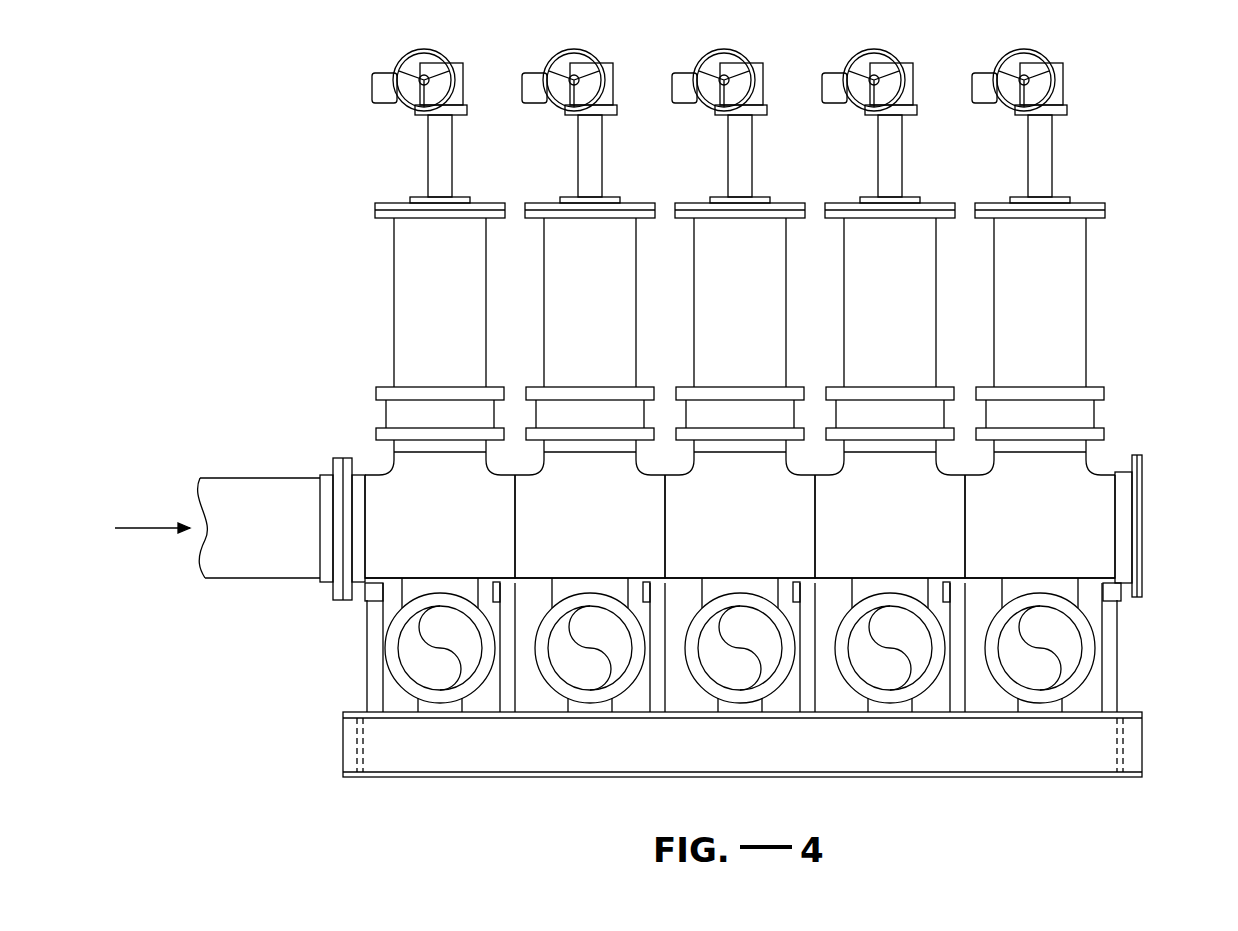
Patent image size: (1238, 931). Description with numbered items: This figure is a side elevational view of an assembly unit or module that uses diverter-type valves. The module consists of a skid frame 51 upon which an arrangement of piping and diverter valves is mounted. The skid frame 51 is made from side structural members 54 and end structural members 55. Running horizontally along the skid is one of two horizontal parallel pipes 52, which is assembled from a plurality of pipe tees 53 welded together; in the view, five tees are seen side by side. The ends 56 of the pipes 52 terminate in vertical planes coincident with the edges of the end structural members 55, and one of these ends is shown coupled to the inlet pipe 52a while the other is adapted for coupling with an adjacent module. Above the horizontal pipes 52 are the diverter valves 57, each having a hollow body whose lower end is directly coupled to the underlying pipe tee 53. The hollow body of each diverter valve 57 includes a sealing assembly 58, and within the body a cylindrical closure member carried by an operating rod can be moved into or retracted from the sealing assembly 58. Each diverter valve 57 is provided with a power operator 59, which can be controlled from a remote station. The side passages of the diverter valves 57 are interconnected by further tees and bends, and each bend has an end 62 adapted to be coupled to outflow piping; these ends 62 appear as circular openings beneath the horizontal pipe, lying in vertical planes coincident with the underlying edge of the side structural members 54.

The skid frame 51 is at (545, 780).
The horizontal parallel pipes 52 is at (438, 582).
The inlet pipe 52a is at (227, 497).
The pipe tees 53 is at (1060, 527).
The side structural members 54 is at (960, 757).
The end structural members 55 is at (345, 742).
The ends of the pipes 56 is at (345, 513).
The diverter valves 57 is at (1048, 320).
The sealing assembly 58 is at (393, 413).
The power operator 59 is at (383, 91).
The end of bend 62 is at (393, 648).